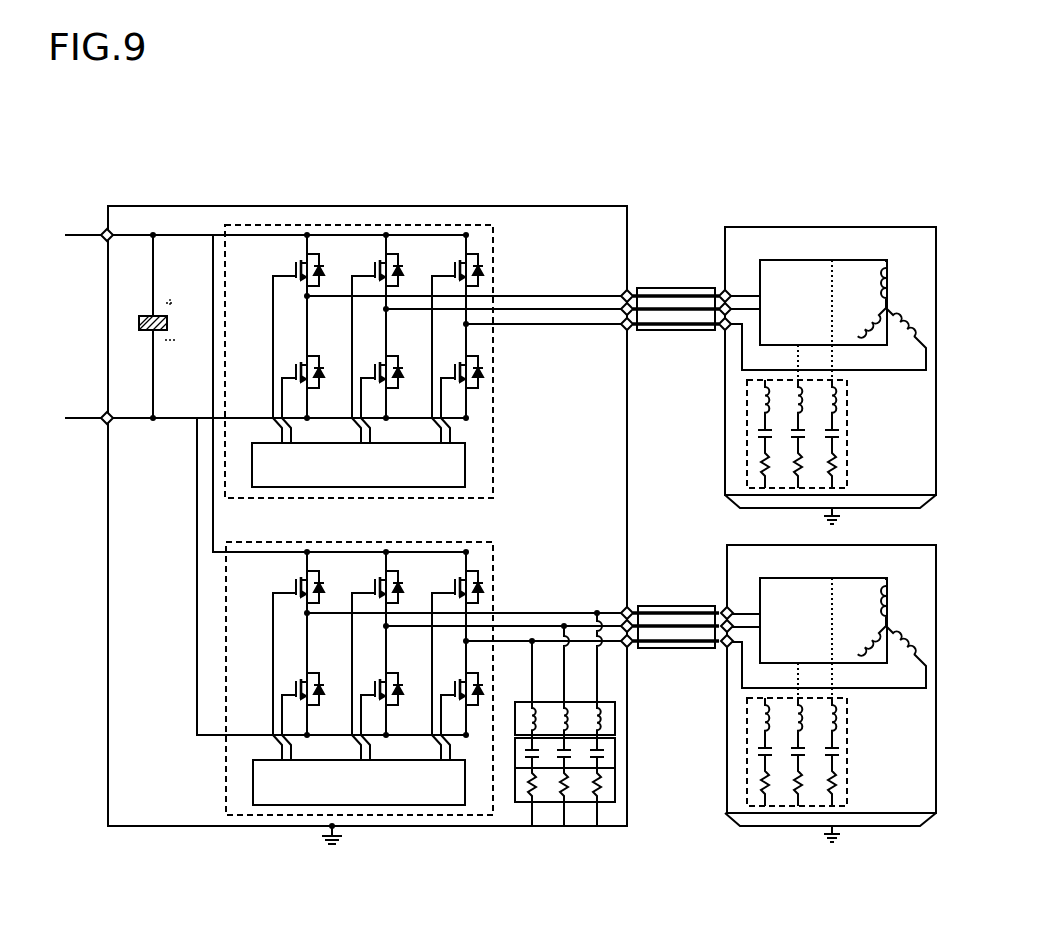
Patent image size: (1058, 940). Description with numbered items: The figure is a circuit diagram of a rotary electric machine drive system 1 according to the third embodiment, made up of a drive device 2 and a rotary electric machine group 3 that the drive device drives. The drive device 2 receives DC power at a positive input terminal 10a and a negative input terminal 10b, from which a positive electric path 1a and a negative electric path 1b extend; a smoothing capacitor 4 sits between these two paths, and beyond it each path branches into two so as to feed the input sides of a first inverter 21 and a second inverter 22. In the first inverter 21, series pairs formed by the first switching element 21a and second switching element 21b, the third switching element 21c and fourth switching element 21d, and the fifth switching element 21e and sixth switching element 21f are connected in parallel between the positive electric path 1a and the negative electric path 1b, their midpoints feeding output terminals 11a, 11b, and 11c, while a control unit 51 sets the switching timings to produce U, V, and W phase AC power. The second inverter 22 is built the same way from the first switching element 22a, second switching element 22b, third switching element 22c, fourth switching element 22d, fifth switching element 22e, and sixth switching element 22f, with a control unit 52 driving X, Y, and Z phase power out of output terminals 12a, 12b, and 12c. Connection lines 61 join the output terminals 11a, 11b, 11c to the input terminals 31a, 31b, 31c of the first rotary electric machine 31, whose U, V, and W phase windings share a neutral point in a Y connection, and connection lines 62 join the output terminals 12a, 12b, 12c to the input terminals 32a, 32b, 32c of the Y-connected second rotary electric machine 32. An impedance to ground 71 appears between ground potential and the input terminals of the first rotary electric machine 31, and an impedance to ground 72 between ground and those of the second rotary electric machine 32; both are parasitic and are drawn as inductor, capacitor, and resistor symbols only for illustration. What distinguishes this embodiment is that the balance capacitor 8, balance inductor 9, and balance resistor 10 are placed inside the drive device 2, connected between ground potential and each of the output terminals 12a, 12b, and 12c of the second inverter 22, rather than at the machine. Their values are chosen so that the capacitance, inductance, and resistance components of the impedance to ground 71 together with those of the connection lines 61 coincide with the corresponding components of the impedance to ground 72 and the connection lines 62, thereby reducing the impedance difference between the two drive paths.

The rotary electric machine drive system 1 is at (662, 189).
The drive device 2 is at (531, 206).
The rotary electric machine group 3 is at (850, 215).
The smoothing capacitor 4 is at (147, 334).
The positive electric path 1a is at (203, 238).
The negative electric path 1b is at (178, 421).
The positive input terminal 10a is at (104, 231).
The negative input terminal 10b is at (104, 414).
The first inverter 21 is at (493, 258).
The first switching element 21a is at (293, 252).
The second switching element 21b is at (373, 252).
The third switching element 21c is at (453, 252).
The fourth switching element 21d is at (282, 366).
The fifth switching element 21e is at (362, 366).
The sixth switching element 21f is at (442, 366).
The second inverter 22 is at (493, 575).
The first switching element 22a is at (293, 569).
The second switching element 22b is at (373, 569).
The third switching element 22c is at (453, 569).
The fourth switching element 22d is at (282, 683).
The fifth switching element 22e is at (362, 683).
The sixth switching element 22f is at (442, 683).
The control unit 51 is at (465, 468).
The control unit 52 is at (252, 787).
The output terminal 11a is at (630, 290).
The output terminal 11b is at (622, 316).
The output terminal 11c is at (630, 332).
The output terminal 12a is at (632, 606).
The output terminal 12b is at (624, 619).
The output terminal 12c is at (631, 649).
The connection lines 61 is at (698, 287).
The connection lines 62 is at (698, 605).
The first rotary electric machine 31 is at (907, 226).
The input terminal 31a is at (728, 288).
The input terminal 31b is at (720, 331).
The input terminal 31c is at (735, 318).
The second rotary electric machine 32 is at (907, 544).
The input terminal 32a is at (730, 606).
The input terminal 32b is at (718, 649).
The input terminal 32c is at (735, 636).
The impedance to ground 71 is at (848, 440).
The impedance to ground 72 is at (848, 758).
The balance capacitor 8 is at (616, 752).
The balance inductor 9 is at (616, 720).
The balance resistor 10 is at (616, 784).